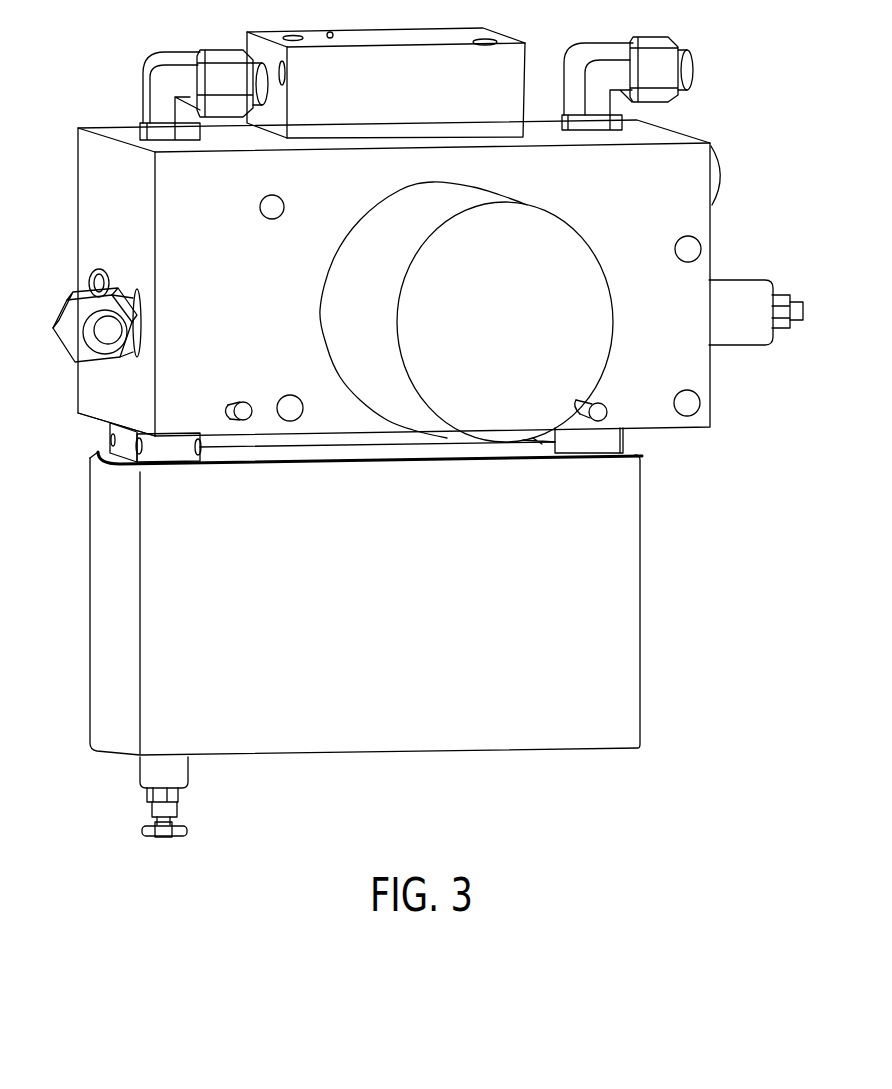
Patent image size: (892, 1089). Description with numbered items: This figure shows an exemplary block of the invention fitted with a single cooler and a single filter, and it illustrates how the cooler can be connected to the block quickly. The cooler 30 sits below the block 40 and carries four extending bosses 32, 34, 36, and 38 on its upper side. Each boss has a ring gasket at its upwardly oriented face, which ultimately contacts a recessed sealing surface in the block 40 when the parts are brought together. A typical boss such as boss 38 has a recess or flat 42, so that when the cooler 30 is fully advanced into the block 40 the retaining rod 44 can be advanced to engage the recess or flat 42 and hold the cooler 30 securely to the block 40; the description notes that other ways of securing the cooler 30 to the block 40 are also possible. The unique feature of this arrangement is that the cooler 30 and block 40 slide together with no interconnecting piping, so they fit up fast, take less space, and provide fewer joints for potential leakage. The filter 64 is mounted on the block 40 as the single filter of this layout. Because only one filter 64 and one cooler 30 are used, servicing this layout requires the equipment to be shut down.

The cooler 30 is at (377, 617).
The extending boss 32 is at (108, 463).
The extending boss 34 is at (540, 441).
The extending boss 36 is at (603, 448).
The extending boss 38 is at (157, 450).
The block 40 is at (710, 240).
The recess or flat 42 is at (200, 450).
The retaining rod 44 is at (253, 414).
The filter 64 is at (517, 340).